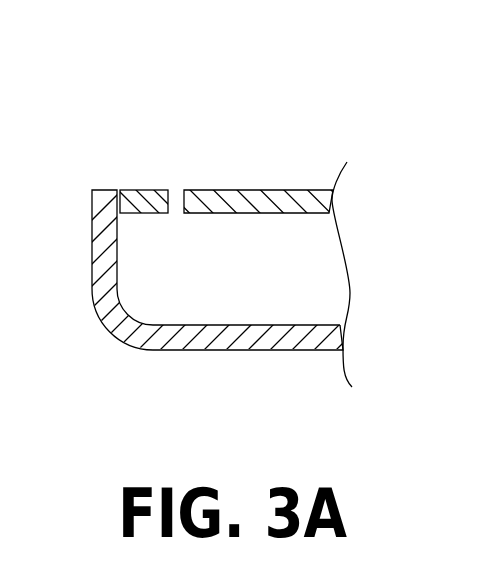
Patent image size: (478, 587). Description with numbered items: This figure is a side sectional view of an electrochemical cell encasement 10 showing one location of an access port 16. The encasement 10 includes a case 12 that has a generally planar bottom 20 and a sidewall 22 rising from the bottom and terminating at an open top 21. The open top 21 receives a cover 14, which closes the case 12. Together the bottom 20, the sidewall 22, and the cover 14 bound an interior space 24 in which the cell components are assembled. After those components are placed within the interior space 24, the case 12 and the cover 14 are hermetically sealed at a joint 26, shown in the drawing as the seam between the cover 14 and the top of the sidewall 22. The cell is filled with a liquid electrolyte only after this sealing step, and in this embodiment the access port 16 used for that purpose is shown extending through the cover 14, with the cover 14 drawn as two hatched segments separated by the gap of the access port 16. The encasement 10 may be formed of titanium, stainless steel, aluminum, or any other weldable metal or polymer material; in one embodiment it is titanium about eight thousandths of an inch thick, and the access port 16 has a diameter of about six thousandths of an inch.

The encasement 10 is at (211, 82).
The case 12 is at (84, 343).
The cover 14 is at (296, 190).
The access port 16 is at (175, 188).
The bottom 20 is at (257, 348).
The open top 21 is at (322, 262).
The sidewall 22 is at (90, 273).
The interior space 24 is at (235, 305).
The joint 26 is at (122, 190).